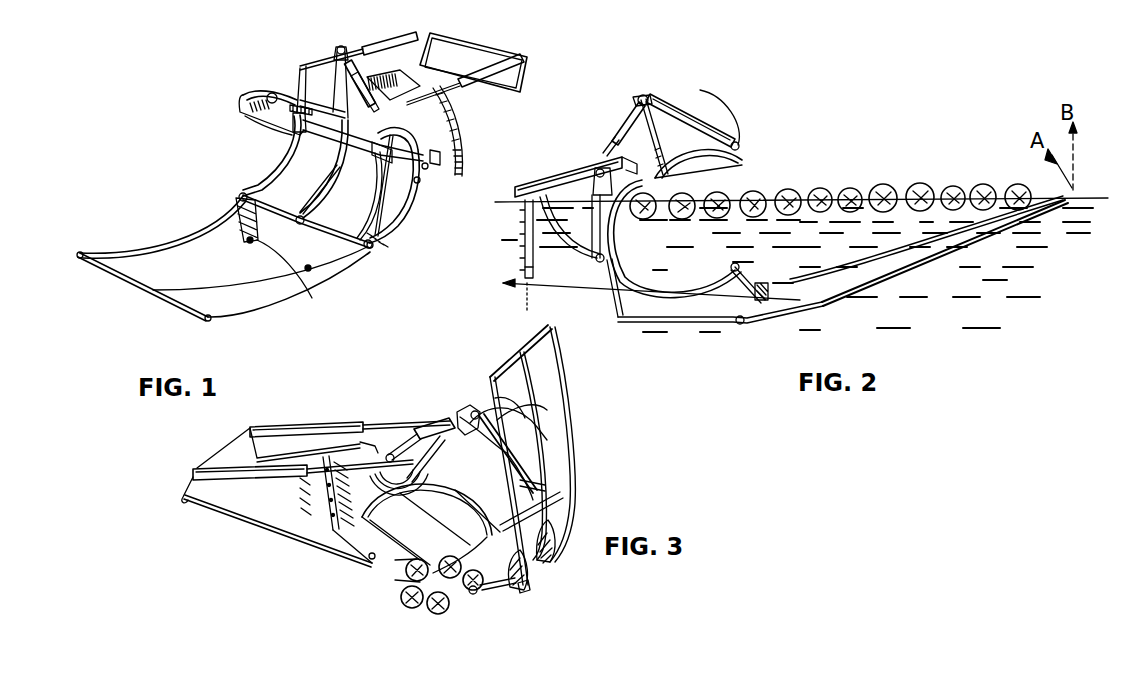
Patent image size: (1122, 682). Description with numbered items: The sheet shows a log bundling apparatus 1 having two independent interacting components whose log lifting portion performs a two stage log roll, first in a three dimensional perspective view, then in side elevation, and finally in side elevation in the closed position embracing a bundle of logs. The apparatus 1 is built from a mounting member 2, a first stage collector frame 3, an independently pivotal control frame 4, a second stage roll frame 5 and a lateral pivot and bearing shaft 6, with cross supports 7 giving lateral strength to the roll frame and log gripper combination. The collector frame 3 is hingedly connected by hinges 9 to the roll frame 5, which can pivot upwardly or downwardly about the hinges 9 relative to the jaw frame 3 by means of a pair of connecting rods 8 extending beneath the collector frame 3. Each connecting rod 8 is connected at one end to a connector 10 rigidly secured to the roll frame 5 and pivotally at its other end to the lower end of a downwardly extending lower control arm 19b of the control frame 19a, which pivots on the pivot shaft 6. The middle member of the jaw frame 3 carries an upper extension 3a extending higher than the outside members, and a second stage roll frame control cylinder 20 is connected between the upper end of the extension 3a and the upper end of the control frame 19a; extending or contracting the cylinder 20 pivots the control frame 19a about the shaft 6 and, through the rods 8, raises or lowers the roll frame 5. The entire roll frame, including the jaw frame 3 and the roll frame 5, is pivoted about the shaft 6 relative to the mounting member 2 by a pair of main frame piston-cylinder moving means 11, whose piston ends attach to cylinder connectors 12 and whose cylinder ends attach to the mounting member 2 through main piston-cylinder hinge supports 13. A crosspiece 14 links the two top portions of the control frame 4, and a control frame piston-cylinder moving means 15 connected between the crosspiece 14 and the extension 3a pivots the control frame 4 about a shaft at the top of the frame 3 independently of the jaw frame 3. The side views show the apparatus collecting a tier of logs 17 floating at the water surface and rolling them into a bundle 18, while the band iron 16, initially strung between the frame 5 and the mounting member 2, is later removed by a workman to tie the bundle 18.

In FIG. 1, the log bundling apparatus 1 is at (166, 234).
In FIG. 1, the mounting member 2 is at (427, 168).
In FIG. 2, the mounting member 2 is at (556, 265).
In FIG. 3, the mounting member 2 is at (353, 547).
In FIG. 1, the first stage collector frame 3 is at (283, 154).
In FIG. 2, the first stage collector frame 3 is at (737, 180).
In FIG. 3, the first stage collector frame 3 is at (443, 445).
In FIG. 1, the upper extension 3a is at (343, 57).
In FIG. 2, the upper extension 3a is at (680, 152).
In FIG. 3, the upper extension 3a is at (460, 422).
In FIG. 1, the independently pivotal control frame 4 is at (255, 88).
In FIG. 2, the independently pivotal control frame 4 is at (733, 140).
In FIG. 3, the independently pivotal control frame 4 is at (545, 485).
In FIG. 1, the second stage roll frame 5 is at (277, 306).
In FIG. 2, the second stage roll frame 5 is at (933, 260).
In FIG. 3, the second stage roll frame 5 is at (490, 393).
In FIG. 1, the lateral pivot and bearing shaft 6 is at (419, 182).
In FIG. 2, the lateral pivot and bearing shaft 6 is at (610, 260).
In FIG. 3, the lateral pivot and bearing shaft 6 is at (370, 560).
In FIG. 1, the cross supports 7 is at (266, 96).
In FIG. 1, the connecting rods 8 is at (390, 233).
In FIG. 2, the connecting rods 8 is at (677, 323).
In FIG. 3, the connecting rods 8 is at (503, 590).
In FIG. 1, the hinges 9 is at (370, 247).
In FIG. 2, the hinges 9 is at (737, 267).
In FIG. 3, the hinges 9 is at (480, 597).
In FIG. 1, the connectors 10 is at (310, 270).
In FIG. 2, the connectors 10 is at (767, 323).
In FIG. 3, the connectors 10 is at (533, 577).
In FIG. 1, the main frame piston-cylinder moving means 11 is at (488, 60).
In FIG. 2, the main frame piston-cylinder moving means 11 is at (560, 178).
In FIG. 3, the main frame piston-cylinder moving means 11 is at (325, 427).
In FIG. 1, the cylinder connectors 12 is at (290, 73).
In FIG. 2, the cylinder connectors 12 is at (613, 150).
In FIG. 3, the cylinder connectors 12 is at (398, 448).
In FIG. 1, the main piston-cylinder hinge supports 13 is at (450, 147).
In FIG. 1, the crosspiece 14 is at (297, 135).
In FIG. 2, the crosspiece 14 is at (700, 113).
In FIG. 3, the crosspiece 14 is at (565, 492).
In FIG. 1, the control frame piston-cylinder moving means 15 is at (318, 72).
In FIG. 2, the control frame piston-cylinder moving means 15 is at (637, 105).
In FIG. 3, the control frame piston-cylinder moving means 15 is at (525, 418).
In FIG. 2, the band iron 16 is at (827, 305).
In FIG. 3, the band iron 16 is at (300, 537).
In FIG. 2, the tier of logs 17 is at (882, 185).
In FIG. 3, the bundle of logs 18 is at (450, 603).
In FIG. 1, the control frame 19a is at (437, 157).
In FIG. 2, the control frame 19a is at (597, 178).
In FIG. 3, the control frame 19a is at (325, 515).
In FIG. 1, the lower control arms 19b is at (387, 185).
In FIG. 2, the lower control arms 19b is at (605, 305).
In FIG. 1, the second stage roll frame control cylinder 20 is at (363, 70).
In FIG. 2, the second stage roll frame control cylinder 20 is at (627, 140).
In FIG. 3, the second stage roll frame control cylinder 20 is at (380, 447).